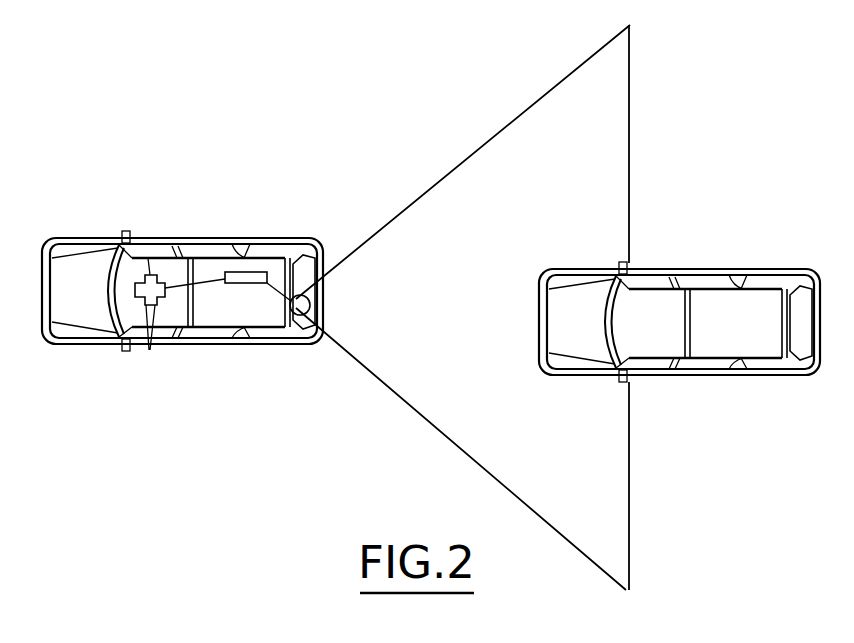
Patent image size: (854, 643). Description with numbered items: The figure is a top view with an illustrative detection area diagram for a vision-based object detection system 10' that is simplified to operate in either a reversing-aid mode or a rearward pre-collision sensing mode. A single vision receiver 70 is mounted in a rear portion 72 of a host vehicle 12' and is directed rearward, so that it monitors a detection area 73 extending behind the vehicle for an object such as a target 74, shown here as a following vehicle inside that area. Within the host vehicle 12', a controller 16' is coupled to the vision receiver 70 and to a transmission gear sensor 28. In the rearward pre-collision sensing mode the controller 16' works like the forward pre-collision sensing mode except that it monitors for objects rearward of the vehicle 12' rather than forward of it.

The vision-based object detection system 10' is at (332, 205).
The host vehicle 12' is at (182, 258).
The controller 16' is at (258, 242).
The transmission gear sensor 28 is at (150, 350).
The vision receiver 70 is at (318, 298).
The rear portion 72 is at (312, 355).
The detection area 73 is at (462, 451).
The target 74 is at (580, 266).